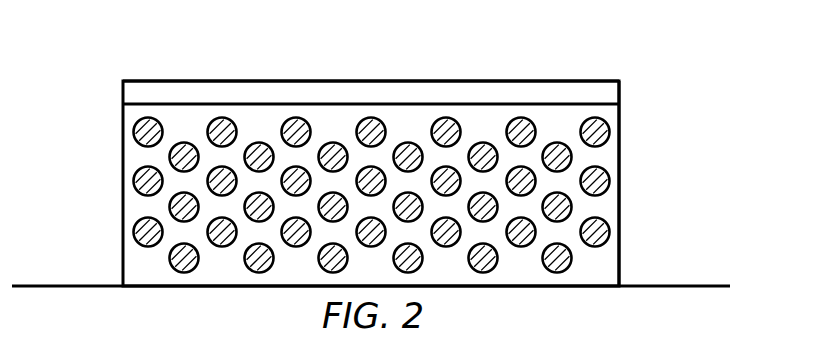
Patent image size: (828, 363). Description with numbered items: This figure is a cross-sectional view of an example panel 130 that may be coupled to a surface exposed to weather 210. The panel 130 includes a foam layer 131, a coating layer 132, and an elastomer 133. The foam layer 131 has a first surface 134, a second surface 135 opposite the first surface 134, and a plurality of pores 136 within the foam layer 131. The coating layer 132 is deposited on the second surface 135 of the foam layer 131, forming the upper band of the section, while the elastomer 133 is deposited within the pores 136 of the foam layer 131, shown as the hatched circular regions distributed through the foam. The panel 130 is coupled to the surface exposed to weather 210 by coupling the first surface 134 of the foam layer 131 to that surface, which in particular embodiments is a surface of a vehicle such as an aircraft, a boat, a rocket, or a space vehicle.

The panel 130 is at (108, 32).
The foam layer 131 is at (137, 266).
The coating layer 132 is at (172, 90).
The elastomer 133 is at (148, 131).
The first surface 134 is at (600, 286).
The second surface 135 is at (492, 104).
The pores 136 is at (597, 131).
The surface exposed to weather 210 is at (700, 286).